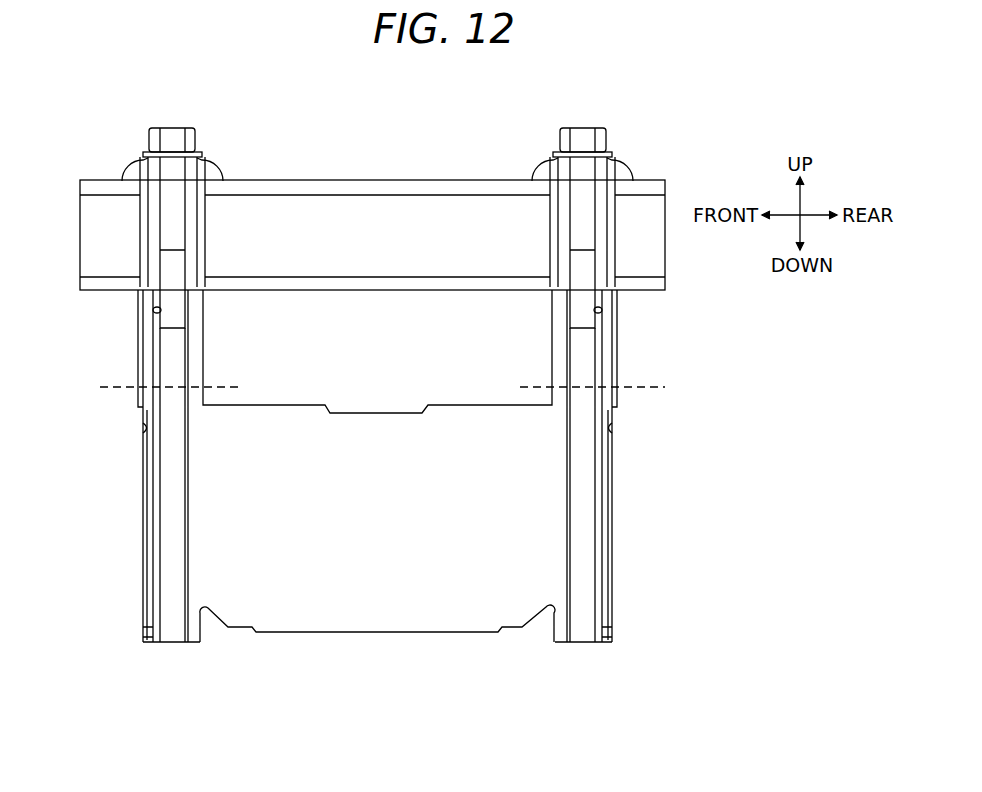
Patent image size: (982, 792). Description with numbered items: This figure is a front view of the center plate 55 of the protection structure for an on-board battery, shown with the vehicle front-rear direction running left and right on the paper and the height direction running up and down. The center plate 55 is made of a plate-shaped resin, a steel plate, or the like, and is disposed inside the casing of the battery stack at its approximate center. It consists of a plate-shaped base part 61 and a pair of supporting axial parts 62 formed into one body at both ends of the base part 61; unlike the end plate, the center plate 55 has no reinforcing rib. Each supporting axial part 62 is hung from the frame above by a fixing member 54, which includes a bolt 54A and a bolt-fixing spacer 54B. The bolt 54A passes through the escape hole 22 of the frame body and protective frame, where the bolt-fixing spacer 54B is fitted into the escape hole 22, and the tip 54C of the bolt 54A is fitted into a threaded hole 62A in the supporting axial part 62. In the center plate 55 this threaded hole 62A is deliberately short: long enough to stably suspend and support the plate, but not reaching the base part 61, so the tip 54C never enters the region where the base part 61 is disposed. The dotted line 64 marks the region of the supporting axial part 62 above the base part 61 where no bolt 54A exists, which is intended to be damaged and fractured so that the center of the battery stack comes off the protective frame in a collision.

The escape hole 22 is at (138, 226).
The fixing member 54 is at (282, 73).
The bolt 54A is at (172, 197).
The bolt-fixing spacer 54B is at (197, 222).
The tip 54C is at (172, 329).
The center plate 55 is at (374, 109).
The base part 61 is at (372, 633).
The supporting axial part 62 is at (150, 371).
The threaded hole 62A is at (155, 310).
The dotted line 64 is at (222, 380).